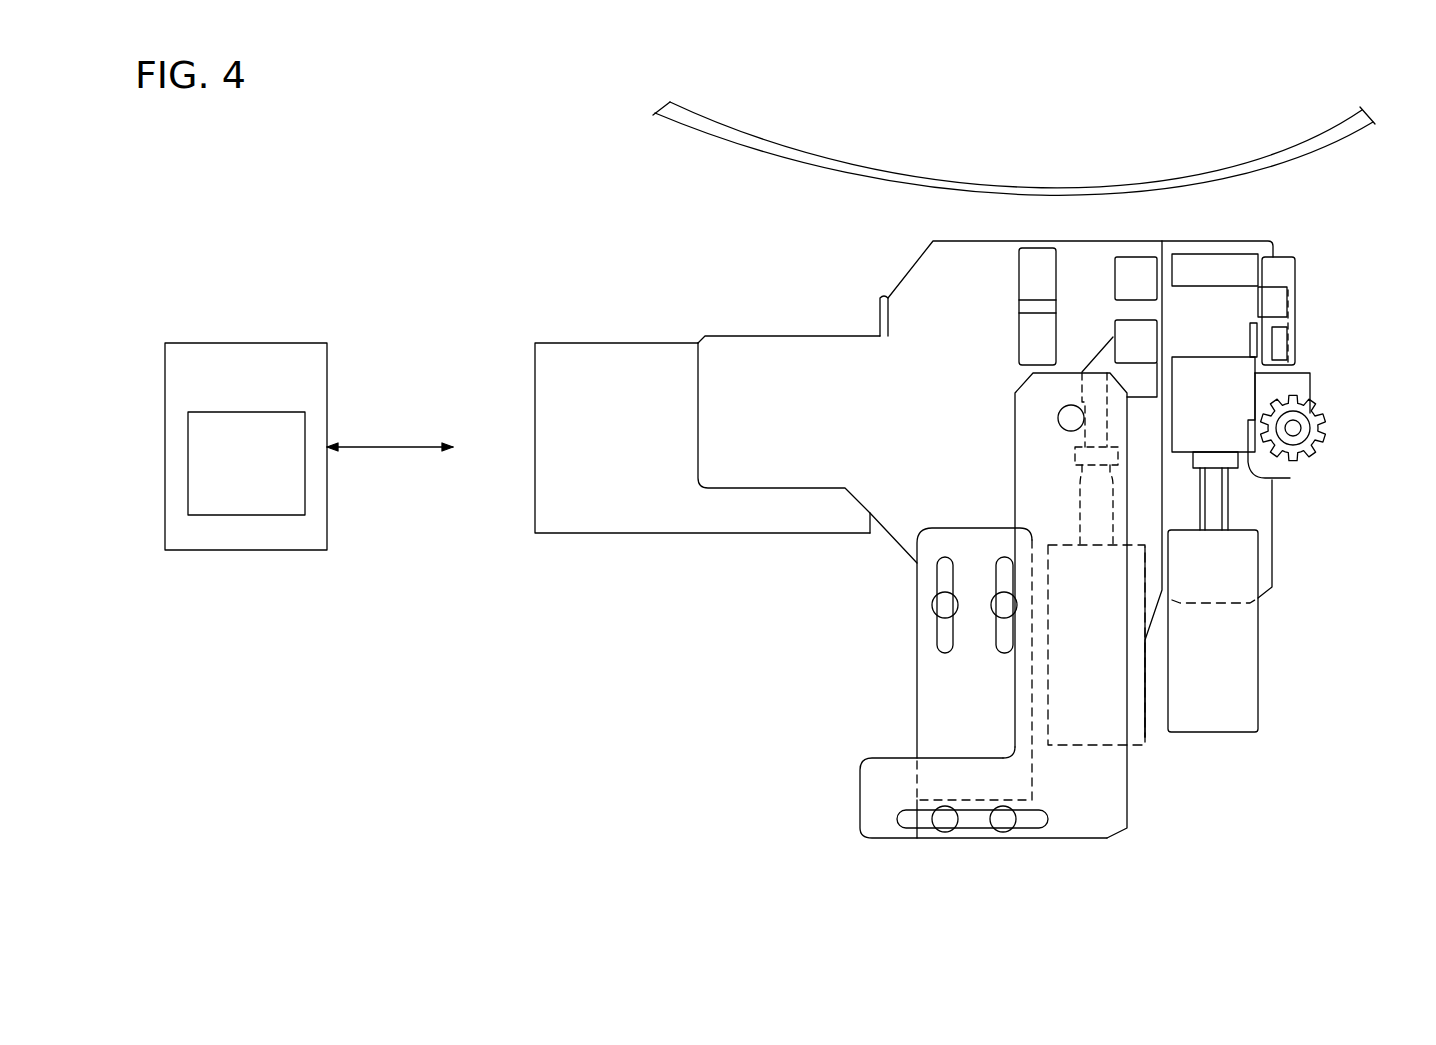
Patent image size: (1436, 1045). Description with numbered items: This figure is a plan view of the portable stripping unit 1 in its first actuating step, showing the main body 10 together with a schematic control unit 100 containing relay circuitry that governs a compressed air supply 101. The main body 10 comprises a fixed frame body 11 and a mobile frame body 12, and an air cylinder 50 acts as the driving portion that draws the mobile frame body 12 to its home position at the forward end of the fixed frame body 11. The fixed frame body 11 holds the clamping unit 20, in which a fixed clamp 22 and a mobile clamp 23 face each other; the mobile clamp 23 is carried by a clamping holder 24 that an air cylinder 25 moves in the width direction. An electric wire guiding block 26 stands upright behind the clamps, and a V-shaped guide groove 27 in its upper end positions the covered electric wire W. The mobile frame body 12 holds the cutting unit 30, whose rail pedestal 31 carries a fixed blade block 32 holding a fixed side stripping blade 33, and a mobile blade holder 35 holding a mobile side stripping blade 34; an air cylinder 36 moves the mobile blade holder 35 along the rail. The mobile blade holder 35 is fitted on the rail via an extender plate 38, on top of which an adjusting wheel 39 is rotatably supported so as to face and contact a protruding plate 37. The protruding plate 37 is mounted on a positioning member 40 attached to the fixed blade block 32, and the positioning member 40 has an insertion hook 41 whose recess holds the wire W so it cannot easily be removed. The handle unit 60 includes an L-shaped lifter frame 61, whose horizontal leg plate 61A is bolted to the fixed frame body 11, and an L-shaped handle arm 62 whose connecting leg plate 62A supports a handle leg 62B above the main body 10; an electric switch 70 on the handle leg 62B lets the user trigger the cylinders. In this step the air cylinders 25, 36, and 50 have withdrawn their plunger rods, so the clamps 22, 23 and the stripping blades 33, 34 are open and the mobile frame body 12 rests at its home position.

The portable stripping unit 1 is at (690, 232).
The main body 10 is at (930, 487).
The fixed frame body 11 is at (803, 470).
The mobile frame body 12 is at (880, 305).
The clamping unit 20 is at (1096, 455).
The fixed clamp 22 is at (1128, 283).
The mobile clamp 23 is at (1128, 331).
The clamping holder 24 is at (1148, 380).
The air cylinder 25 is at (1138, 733).
The electric wire guiding block 26 is at (1027, 269).
The guide groove 27 is at (1025, 312).
The cutting unit 30 is at (1296, 466).
The rail pedestal 31 is at (1272, 243).
The fixed blade block 32 is at (1210, 262).
The fixed side stripping blade 33 is at (1258, 297).
The mobile side stripping blade 34 is at (1248, 343).
The mobile blade holder 35 is at (1250, 470).
The air cylinder 36 is at (1252, 717).
The protruding plate 37 is at (1298, 334).
The extender plate 38 is at (1310, 385).
The adjusting wheel 39 is at (1330, 421).
The positioning member 40 is at (1303, 260).
The insertion hook 41 is at (1275, 292).
The air cylinder 50 is at (650, 338).
The handle unit 60 is at (1014, 606).
The lifter/installation frame 61 is at (904, 683).
The horizontal leg plate 61A is at (940, 705).
The handle arm 62 is at (1056, 606).
The connecting/installation leg plate 62A is at (1067, 825).
The handle leg 62B is at (994, 605).
The electric switch 70 is at (1063, 418).
The control unit 100 is at (264, 496).
The compressed air supply 101 is at (195, 502).
The covered electric wire W is at (790, 143).